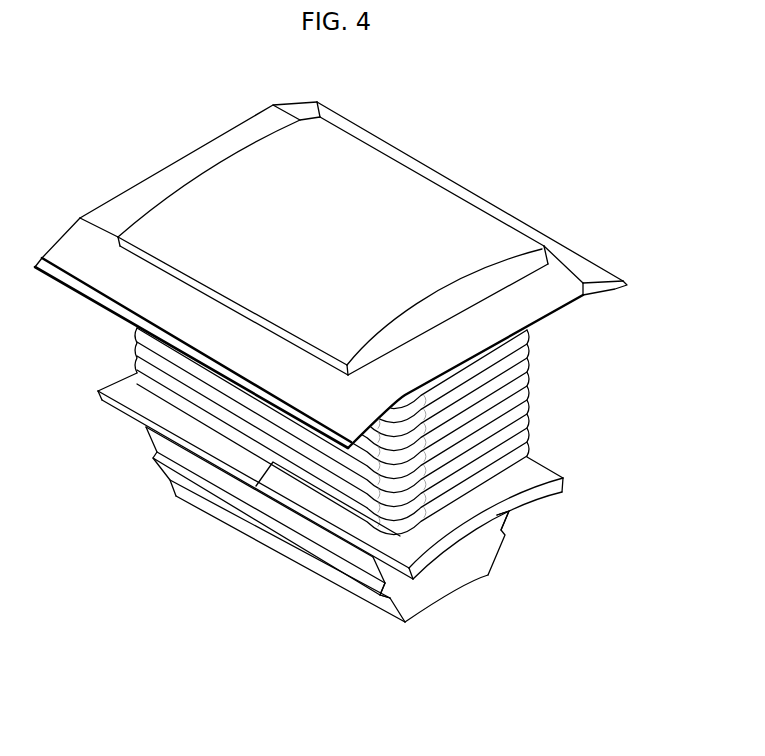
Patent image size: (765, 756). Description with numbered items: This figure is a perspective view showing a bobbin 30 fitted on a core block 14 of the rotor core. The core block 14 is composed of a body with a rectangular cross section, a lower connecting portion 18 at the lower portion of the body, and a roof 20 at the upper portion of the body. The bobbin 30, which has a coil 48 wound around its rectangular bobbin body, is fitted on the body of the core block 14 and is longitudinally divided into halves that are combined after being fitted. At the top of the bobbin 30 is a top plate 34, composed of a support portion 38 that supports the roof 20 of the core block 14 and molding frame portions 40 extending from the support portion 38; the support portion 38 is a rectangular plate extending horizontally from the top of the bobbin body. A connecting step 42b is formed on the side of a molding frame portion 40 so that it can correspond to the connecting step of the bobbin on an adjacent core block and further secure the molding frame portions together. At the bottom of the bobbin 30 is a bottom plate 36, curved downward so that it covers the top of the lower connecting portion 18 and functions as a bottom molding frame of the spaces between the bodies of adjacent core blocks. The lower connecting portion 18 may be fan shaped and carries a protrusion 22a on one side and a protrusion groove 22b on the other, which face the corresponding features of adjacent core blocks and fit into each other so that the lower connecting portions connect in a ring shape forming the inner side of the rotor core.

The core block 14 is at (443, 172).
The roof 20 is at (367, 157).
The top plate 34 is at (583, 224).
The support portion 38 is at (550, 277).
The molding frame portion 40 is at (590, 270).
The connecting step 42b is at (624, 290).
The bobbin 30 is at (378, 418).
The coil 48 is at (529, 418).
The bottom plate 36 is at (567, 481).
The lower connecting portion 18 is at (489, 558).
The protrusion 22a is at (380, 597).
The protrusion groove 22b is at (502, 522).